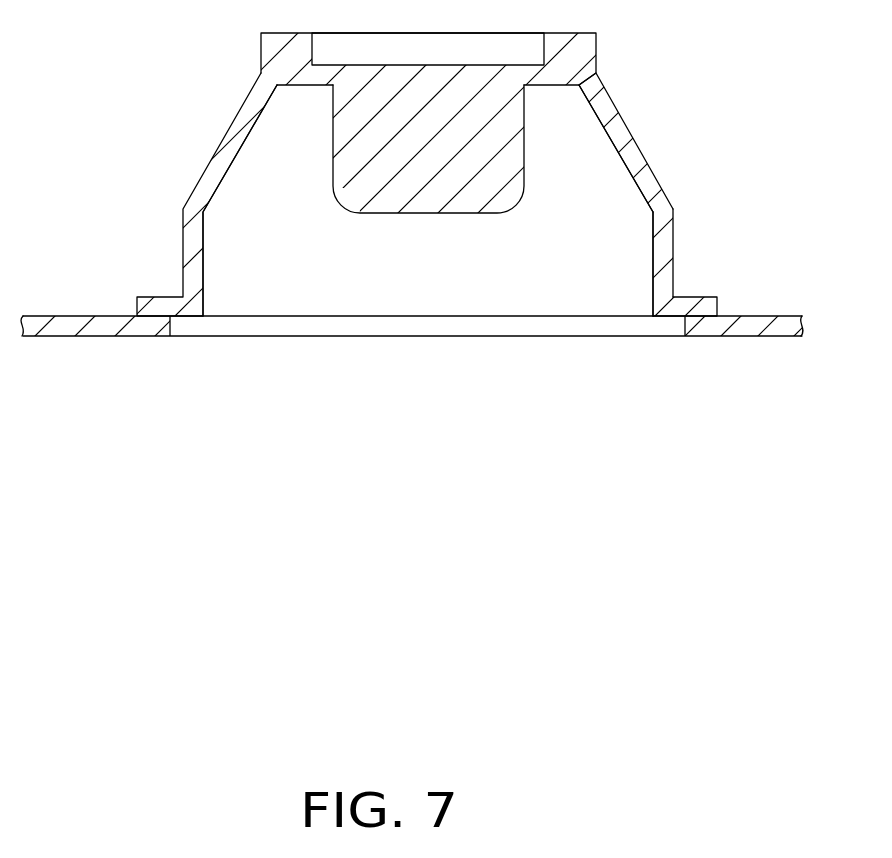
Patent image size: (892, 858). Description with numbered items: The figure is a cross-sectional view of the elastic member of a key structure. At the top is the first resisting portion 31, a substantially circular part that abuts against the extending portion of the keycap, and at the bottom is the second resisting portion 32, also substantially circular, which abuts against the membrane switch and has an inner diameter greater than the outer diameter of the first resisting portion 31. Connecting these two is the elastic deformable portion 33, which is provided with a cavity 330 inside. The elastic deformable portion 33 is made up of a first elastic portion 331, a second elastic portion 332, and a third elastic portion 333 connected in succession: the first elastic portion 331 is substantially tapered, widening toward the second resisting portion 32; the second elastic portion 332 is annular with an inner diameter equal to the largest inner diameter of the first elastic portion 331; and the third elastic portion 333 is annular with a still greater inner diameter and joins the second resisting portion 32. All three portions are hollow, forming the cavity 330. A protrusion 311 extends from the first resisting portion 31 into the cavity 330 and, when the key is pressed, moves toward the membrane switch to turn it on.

The first resisting portion 31 is at (575, 47).
The protrusion 311 is at (370, 143).
The second resisting portion 32 is at (743, 332).
The elastic deformable portion 33 is at (446, 429).
The cavity 330 is at (230, 247).
The first elastic portion 331 is at (620, 137).
The second elastic portion 332 is at (658, 243).
The third elastic portion 333 is at (740, 293).